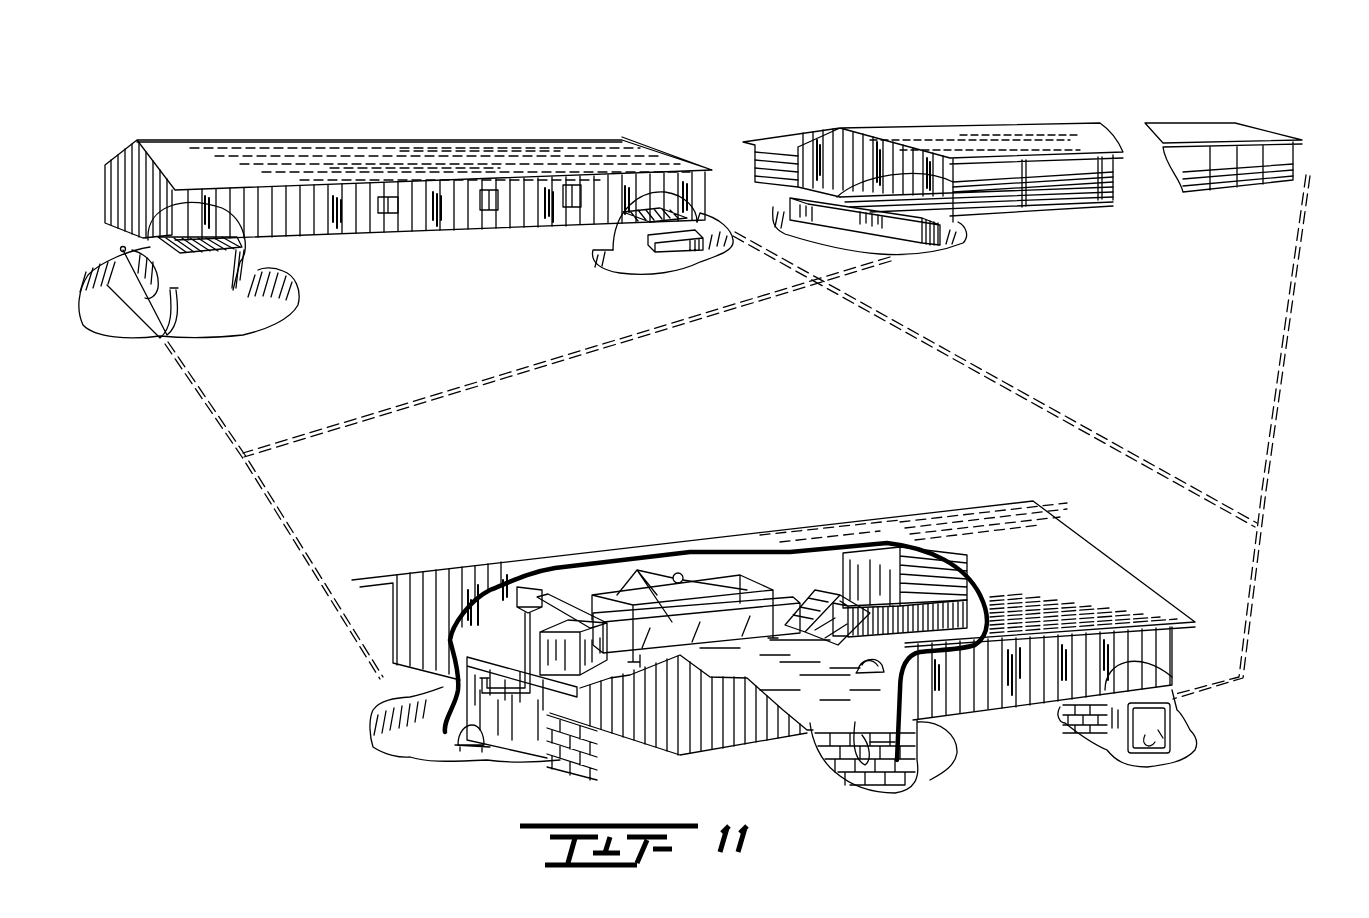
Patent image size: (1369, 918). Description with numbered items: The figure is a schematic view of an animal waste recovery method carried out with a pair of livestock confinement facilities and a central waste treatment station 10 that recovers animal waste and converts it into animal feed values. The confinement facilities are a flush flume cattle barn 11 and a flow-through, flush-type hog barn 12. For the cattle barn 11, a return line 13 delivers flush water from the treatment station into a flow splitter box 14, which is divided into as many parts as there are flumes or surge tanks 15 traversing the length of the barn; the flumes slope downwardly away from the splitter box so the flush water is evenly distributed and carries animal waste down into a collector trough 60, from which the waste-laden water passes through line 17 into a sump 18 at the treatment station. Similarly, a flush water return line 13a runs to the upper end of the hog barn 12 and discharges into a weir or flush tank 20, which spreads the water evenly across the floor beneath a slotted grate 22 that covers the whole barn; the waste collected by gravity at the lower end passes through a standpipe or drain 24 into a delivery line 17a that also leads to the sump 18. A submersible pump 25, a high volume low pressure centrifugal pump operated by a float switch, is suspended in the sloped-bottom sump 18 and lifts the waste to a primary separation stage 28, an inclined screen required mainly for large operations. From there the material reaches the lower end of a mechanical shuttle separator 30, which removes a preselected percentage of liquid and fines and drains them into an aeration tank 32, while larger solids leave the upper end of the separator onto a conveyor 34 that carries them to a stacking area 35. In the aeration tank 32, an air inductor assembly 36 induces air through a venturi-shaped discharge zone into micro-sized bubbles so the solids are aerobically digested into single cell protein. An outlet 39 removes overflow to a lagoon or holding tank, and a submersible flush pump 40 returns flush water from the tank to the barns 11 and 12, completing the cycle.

The waste treatment station 10 is at (1098, 543).
The flush flume cattle barn 11 is at (1003, 126).
The flush-type hog barn 12 is at (325, 140).
The return line 13 is at (1283, 344).
The flush water return line 13a is at (992, 374).
The flow splitter box 14 is at (1293, 170).
The flumes or surge tanks 15 is at (1047, 200).
The line 17 is at (557, 365).
The delivery line 17a is at (220, 424).
The sump 18 is at (493, 755).
The weir or flush tank 20 is at (673, 245).
The slotted grate 22 is at (228, 270).
The standpipe or drain 24 is at (210, 337).
The submersible pump 25 is at (460, 735).
The primary separation stage 28 is at (555, 590).
The mechanical shuttle separator 30 is at (653, 576).
The aeration tank 32 is at (913, 762).
The conveyor 34 is at (810, 590).
The stacking area 35 is at (872, 590).
The air inductor assembly 36 is at (853, 752).
The outlet 39 is at (1090, 728).
The submersible flush pump 40 is at (1135, 748).
The collector trough 60 is at (927, 238).